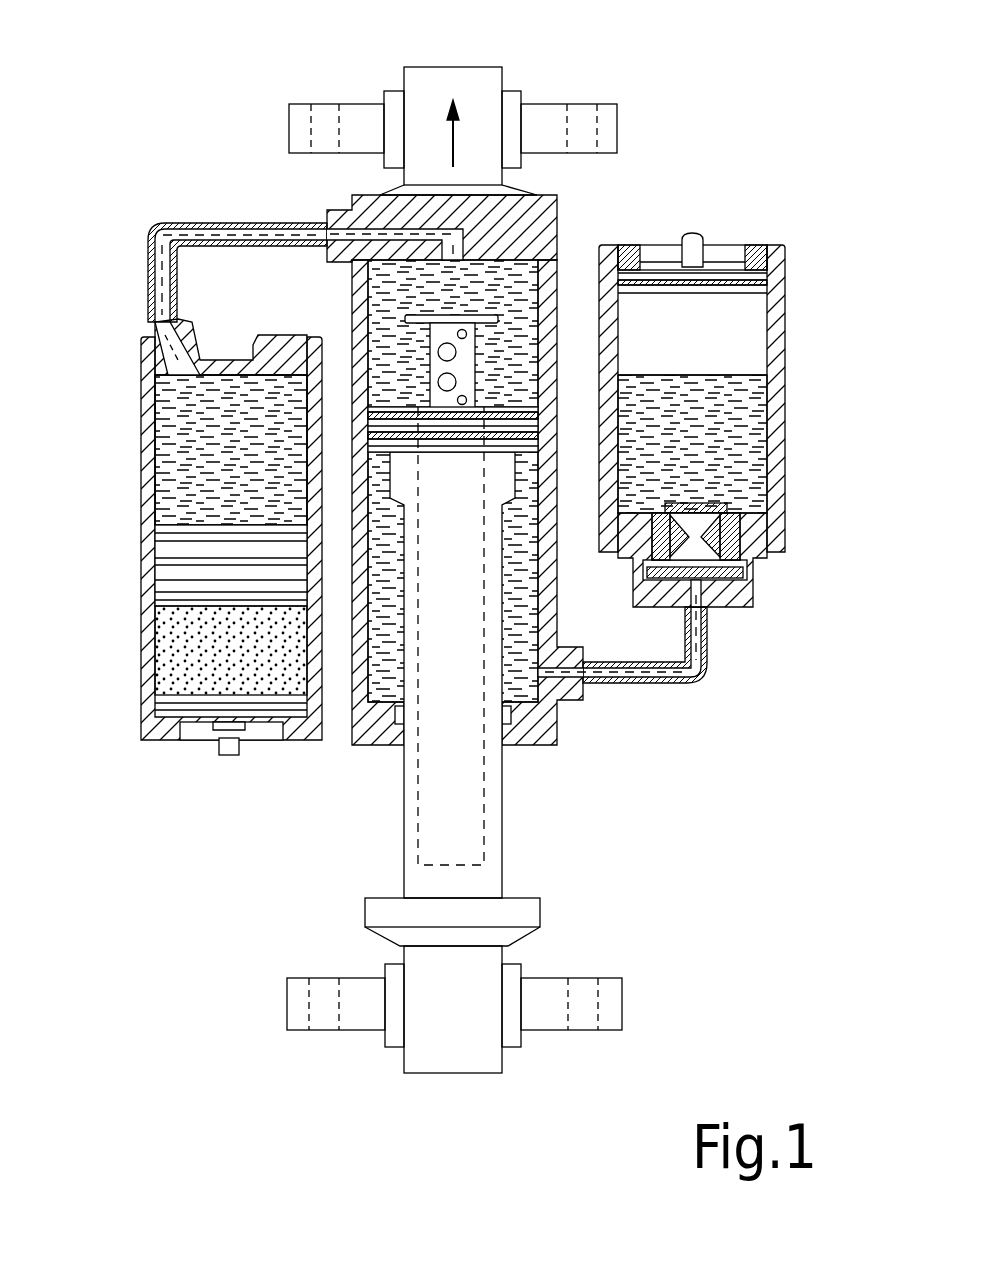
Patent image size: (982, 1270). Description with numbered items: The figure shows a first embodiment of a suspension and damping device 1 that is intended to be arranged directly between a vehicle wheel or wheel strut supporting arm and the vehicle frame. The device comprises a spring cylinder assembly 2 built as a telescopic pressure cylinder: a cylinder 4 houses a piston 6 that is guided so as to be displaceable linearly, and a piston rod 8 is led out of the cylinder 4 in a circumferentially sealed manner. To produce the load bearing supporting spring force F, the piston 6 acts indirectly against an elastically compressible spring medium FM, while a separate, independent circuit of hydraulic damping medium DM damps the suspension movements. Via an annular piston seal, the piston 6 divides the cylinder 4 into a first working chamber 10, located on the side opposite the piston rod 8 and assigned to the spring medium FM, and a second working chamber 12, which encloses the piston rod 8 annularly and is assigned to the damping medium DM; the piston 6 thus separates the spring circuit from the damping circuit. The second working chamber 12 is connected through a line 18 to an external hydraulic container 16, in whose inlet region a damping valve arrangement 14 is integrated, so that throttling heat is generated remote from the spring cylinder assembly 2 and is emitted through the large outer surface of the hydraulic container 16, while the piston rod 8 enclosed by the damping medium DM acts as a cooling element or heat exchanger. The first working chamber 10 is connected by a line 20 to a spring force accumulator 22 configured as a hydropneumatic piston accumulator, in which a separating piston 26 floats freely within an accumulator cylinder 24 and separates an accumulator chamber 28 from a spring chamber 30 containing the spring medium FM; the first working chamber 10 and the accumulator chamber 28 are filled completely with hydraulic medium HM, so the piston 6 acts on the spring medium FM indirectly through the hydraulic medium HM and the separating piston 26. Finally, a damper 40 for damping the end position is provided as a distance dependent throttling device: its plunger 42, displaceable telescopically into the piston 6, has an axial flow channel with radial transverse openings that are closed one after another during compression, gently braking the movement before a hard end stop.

The suspension and damping device 1 is at (172, 911).
The spring cylinder assembly 2 is at (566, 723).
The cylinder 4 is at (545, 270).
The piston 6 is at (393, 400).
The piston rod 8 is at (428, 795).
The first working chamber 10 is at (507, 280).
The second working chamber 12 is at (525, 540).
The damping valve arrangement 14 is at (746, 496).
The hydraulic container 16 is at (777, 377).
The line 18 is at (675, 687).
The line 20 is at (182, 224).
The spring force accumulator 22 is at (133, 524).
The accumulator cylinder 24 is at (150, 430).
The separating piston 26 is at (180, 554).
The accumulator chamber 28 is at (180, 420).
The spring chamber 30 is at (182, 676).
The damper for damping the end position 40 is at (493, 371).
The plunger 42 is at (468, 347).
The supporting spring force F is at (448, 137).
The hydraulic medium HM is at (428, 280).
The damping medium DM is at (527, 605).
The spring medium FM is at (200, 643).